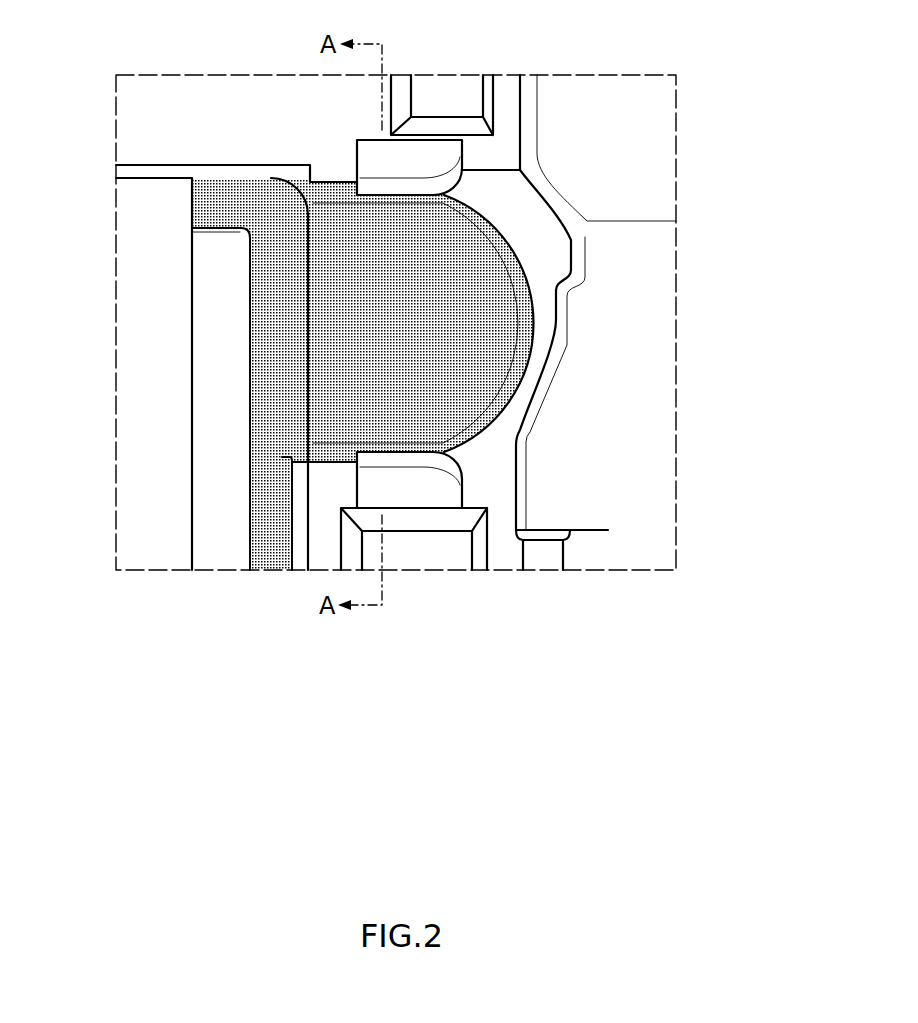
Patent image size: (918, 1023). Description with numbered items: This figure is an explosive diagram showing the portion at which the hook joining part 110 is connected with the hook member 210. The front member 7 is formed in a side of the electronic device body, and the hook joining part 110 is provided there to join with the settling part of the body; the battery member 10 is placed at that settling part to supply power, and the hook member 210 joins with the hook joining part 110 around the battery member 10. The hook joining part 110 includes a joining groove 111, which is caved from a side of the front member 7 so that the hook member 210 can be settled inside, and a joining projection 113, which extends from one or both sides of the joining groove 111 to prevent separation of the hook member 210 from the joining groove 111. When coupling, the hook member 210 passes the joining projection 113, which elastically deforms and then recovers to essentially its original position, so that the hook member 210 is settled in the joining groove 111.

The front member 7 is at (244, 100).
The battery member 10 is at (140, 472).
The hook joining part 110 is at (576, 322).
The joining groove 111 is at (552, 243).
The joining projection 113 is at (440, 158).
The hook member 210 is at (507, 315).